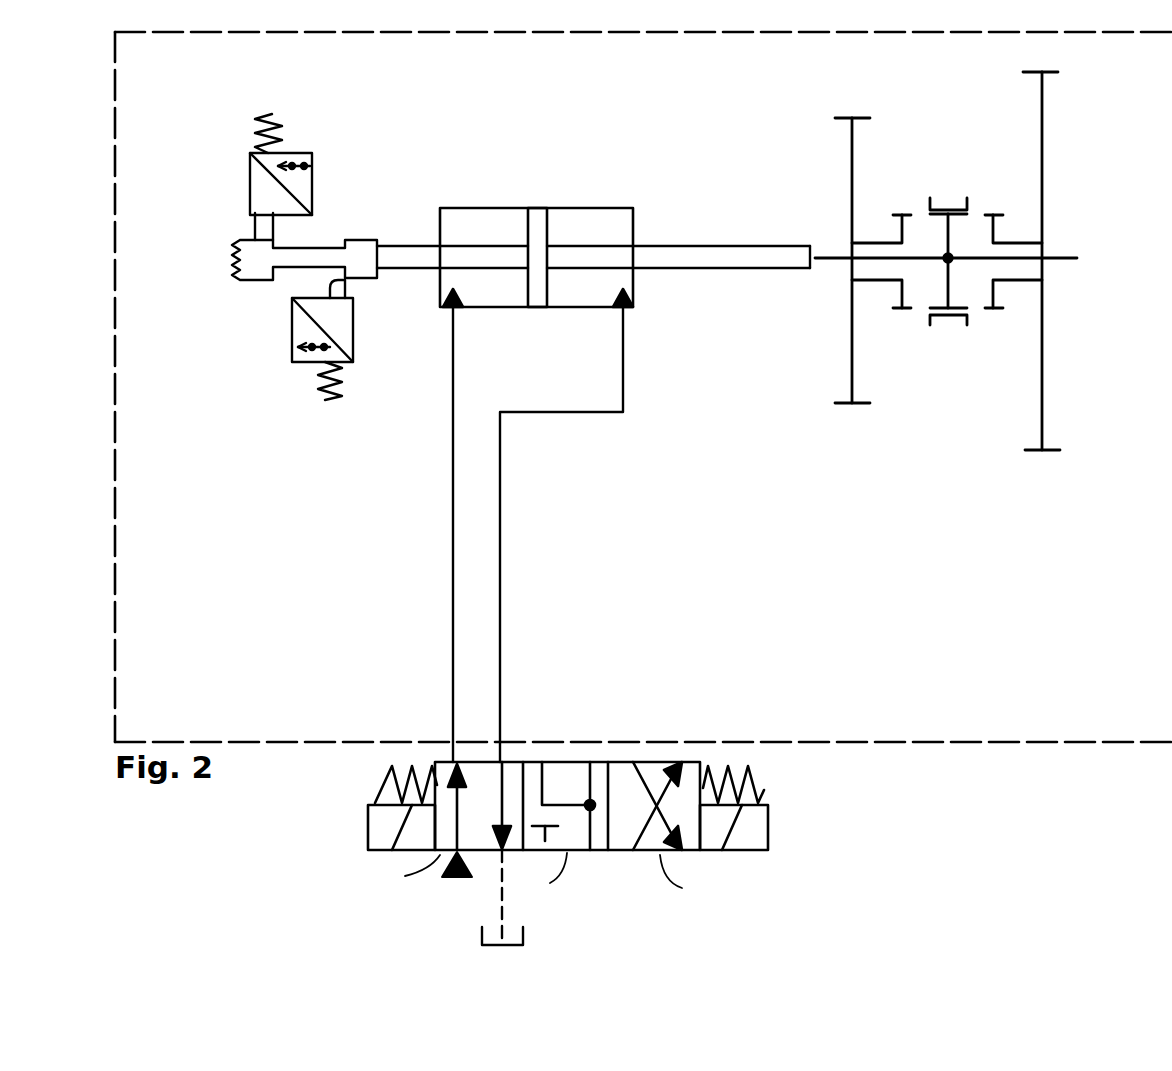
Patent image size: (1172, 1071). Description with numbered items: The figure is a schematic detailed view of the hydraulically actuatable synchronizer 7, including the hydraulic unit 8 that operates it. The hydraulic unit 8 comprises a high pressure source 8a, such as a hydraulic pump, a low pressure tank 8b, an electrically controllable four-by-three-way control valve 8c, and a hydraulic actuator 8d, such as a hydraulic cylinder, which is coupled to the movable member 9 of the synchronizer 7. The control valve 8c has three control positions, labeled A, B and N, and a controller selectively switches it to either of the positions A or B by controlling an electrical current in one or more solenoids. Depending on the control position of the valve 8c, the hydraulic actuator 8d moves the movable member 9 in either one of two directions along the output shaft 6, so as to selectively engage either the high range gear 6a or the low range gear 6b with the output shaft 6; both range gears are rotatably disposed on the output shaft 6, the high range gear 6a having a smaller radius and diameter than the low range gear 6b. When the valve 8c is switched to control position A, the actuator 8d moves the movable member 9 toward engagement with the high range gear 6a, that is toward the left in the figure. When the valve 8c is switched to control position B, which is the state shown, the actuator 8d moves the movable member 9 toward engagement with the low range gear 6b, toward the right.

The output shaft 6 is at (1067, 252).
The high range gear 6a is at (852, 366).
The low range gear 6b is at (1047, 381).
The hydraulically actuatable synchronizer 7 is at (996, 806).
The hydraulic unit 8 is at (228, 472).
The high pressure source 8a is at (450, 882).
The low pressure tank 8b is at (528, 935).
The 4/3-way control valve 8c is at (793, 827).
The hydraulic actuator 8d is at (583, 183).
The movable member 9 is at (945, 205).